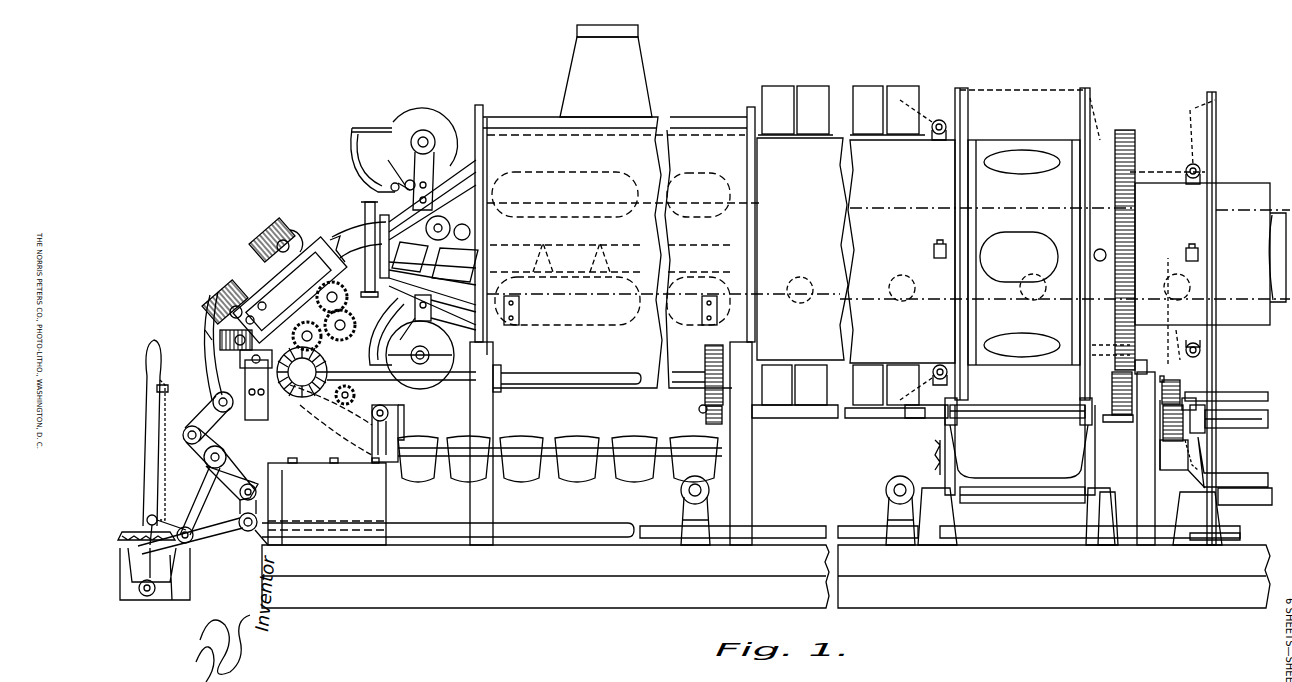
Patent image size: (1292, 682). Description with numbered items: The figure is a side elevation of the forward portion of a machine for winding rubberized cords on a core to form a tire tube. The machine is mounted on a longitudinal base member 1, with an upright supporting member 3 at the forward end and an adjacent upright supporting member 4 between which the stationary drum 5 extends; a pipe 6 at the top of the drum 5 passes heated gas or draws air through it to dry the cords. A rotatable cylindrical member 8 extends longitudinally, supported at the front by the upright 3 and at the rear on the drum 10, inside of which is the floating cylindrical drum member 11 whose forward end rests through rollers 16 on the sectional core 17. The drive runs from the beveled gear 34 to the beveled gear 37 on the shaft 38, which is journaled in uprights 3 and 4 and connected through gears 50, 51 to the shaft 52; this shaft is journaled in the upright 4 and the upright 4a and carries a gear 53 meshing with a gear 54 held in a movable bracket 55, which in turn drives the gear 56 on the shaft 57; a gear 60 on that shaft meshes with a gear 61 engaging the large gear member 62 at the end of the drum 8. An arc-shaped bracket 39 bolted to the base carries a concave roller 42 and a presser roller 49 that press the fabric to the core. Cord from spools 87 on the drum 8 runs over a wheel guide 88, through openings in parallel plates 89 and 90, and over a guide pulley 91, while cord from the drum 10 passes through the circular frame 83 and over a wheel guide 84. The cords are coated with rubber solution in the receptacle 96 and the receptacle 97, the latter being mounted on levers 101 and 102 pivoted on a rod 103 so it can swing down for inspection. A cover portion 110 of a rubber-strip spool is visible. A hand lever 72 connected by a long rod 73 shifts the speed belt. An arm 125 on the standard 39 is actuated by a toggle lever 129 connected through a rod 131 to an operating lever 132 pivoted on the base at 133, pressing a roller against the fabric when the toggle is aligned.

The base member 1 is at (766, 576).
The upright supporting member 3 is at (481, 325).
The upright supporting member 4 is at (740, 443).
The upright 4a is at (1140, 430).
The drum 5 is at (708, 123).
The pipe 6 is at (606, 71).
The cylindrical member 8 is at (1120, 128).
The drum 10 is at (1262, 185).
The cylindrical drum member 11 is at (1270, 262).
The rollers 16 is at (498, 236).
The sectional core 17 is at (455, 265).
The beveled gear 34 is at (376, 349).
The beveled gear 37 is at (265, 385).
The shaft 38 is at (336, 467).
The arc-shaped bracket 39 is at (372, 448).
The roller 42 is at (300, 452).
The presser roller 49 is at (332, 240).
The gear 50 is at (704, 392).
The gear 51 is at (704, 420).
The shaft 52 is at (820, 420).
The gear 53 is at (1190, 440).
The gear 54 is at (1163, 445).
The movable bracket 55 is at (1185, 407).
The gear 56 is at (1175, 379).
The shaft 57 is at (1260, 391).
The gear 60 is at (1111, 393).
The gear 61 is at (1148, 359).
The large gear member 62 is at (1138, 250).
The hand lever 72 is at (148, 418).
The long rod 73 is at (616, 526).
The circular frame 83 is at (1214, 122).
The wheel guide 84 is at (1183, 168).
The spools 87 is at (868, 96).
The wheel guide 88 is at (932, 250).
The plate 89 is at (966, 118).
The plate 90 is at (1080, 118).
The guide pulley 91 is at (1102, 140).
The receptacle 96 is at (1252, 429).
The receptacle 97 is at (1026, 410).
The lever 101 is at (1080, 448).
The lever 102 is at (936, 446).
The rod 103 is at (1248, 503).
The cover portion 110 is at (411, 343).
The arm 125 is at (208, 352).
The toggle lever 129 is at (204, 462).
The rod 131 is at (203, 488).
The operating lever 132 is at (230, 538).
The pivot 133 is at (256, 518).